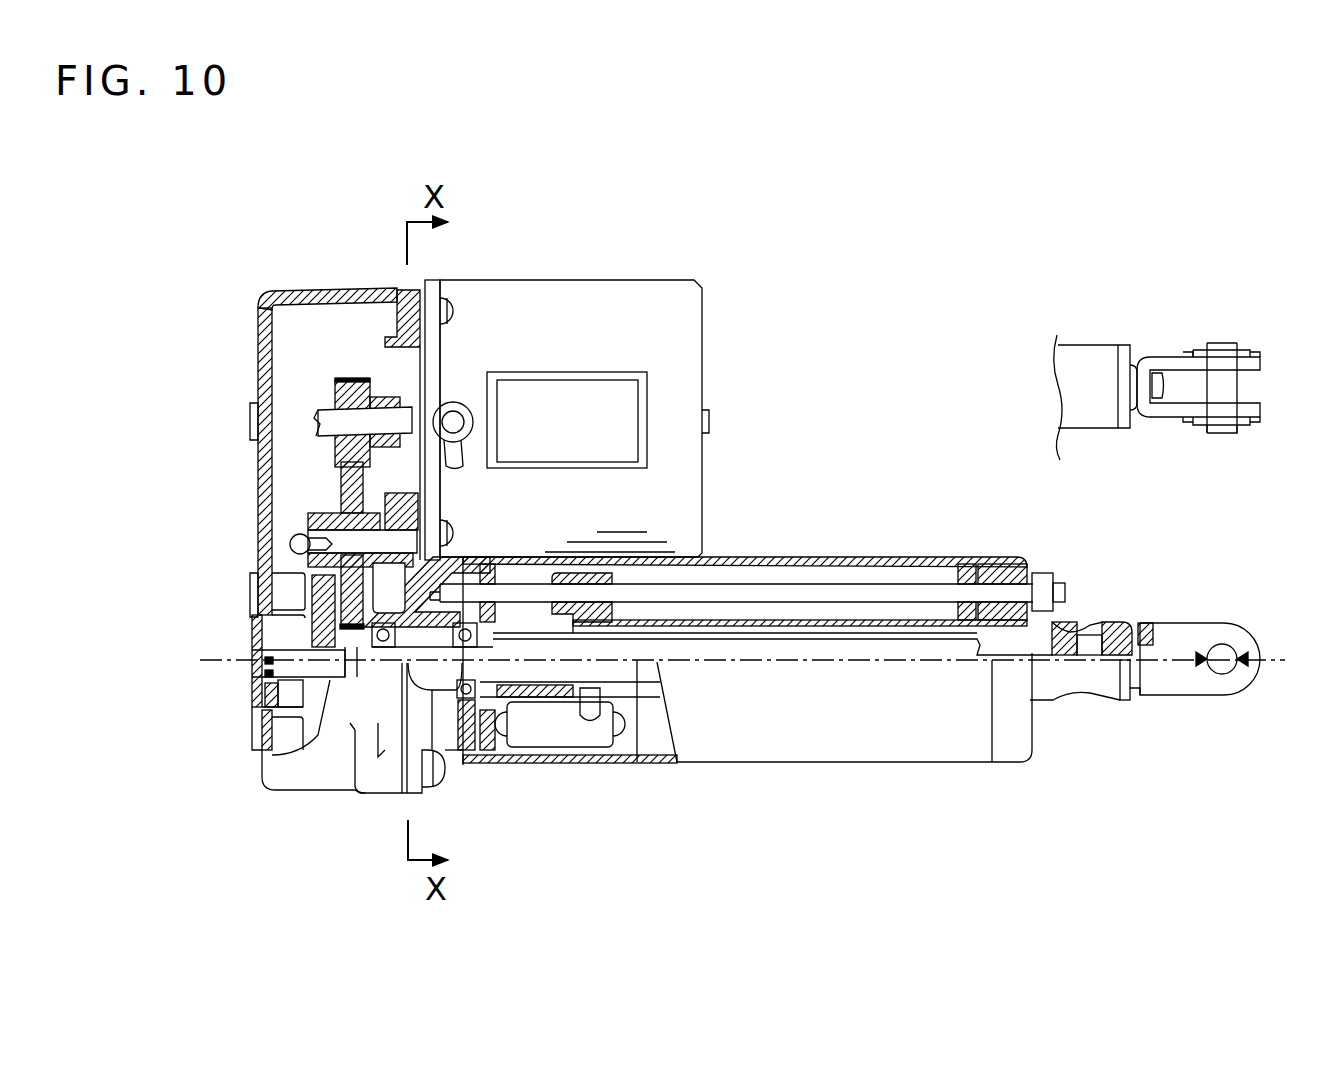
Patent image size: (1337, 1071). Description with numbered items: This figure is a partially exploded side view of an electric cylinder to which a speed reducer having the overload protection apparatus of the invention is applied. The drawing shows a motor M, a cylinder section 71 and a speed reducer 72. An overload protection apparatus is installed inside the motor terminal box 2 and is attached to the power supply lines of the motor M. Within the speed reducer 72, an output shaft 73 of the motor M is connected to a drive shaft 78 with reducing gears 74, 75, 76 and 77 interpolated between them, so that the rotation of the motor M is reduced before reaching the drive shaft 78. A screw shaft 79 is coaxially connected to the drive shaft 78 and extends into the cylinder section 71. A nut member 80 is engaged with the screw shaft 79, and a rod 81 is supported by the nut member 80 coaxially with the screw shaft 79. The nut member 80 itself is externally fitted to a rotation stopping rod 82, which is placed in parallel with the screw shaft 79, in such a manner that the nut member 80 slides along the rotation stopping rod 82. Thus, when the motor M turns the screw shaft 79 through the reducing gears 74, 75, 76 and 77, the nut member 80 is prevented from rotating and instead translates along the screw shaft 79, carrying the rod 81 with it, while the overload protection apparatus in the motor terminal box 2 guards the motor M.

The cylinder section 71 is at (793, 782).
The speed reducer 72 is at (293, 286).
The output shaft 73 is at (415, 405).
The reducing gear 74 is at (335, 395).
The reducing gear 75 is at (340, 478).
The reducing gear 76 is at (340, 498).
The reducing gear 77 is at (320, 594).
The drive shaft 78 is at (263, 677).
The screw shaft 79 is at (643, 683).
The nut member 80 is at (613, 578).
The rod 81 is at (830, 622).
The rotation stopping rod 82 is at (908, 592).
The motor terminal box 2 is at (630, 400).
The motor M is at (625, 290).